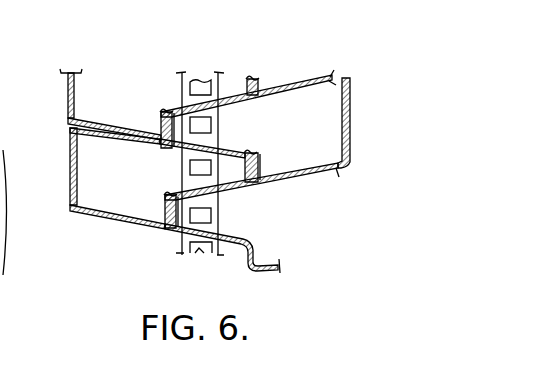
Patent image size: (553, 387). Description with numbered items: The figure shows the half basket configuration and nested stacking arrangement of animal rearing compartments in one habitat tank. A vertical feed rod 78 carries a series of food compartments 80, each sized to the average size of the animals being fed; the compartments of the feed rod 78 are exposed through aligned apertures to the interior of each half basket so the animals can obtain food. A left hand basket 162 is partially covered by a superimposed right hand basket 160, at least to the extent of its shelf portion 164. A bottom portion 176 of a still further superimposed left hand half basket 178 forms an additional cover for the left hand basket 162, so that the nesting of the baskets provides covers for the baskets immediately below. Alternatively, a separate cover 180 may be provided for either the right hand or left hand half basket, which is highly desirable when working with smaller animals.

The feed rod 78 is at (212, 73).
The food compartment 80 is at (203, 128).
The right hand basket 160 is at (349, 147).
The left hand basket 162 is at (107, 214).
The shelf portion 164 is at (233, 149).
The bottom portion 176 is at (73, 117).
The left hand half basket 178 is at (67, 90).
The separate cover 180 is at (117, 143).